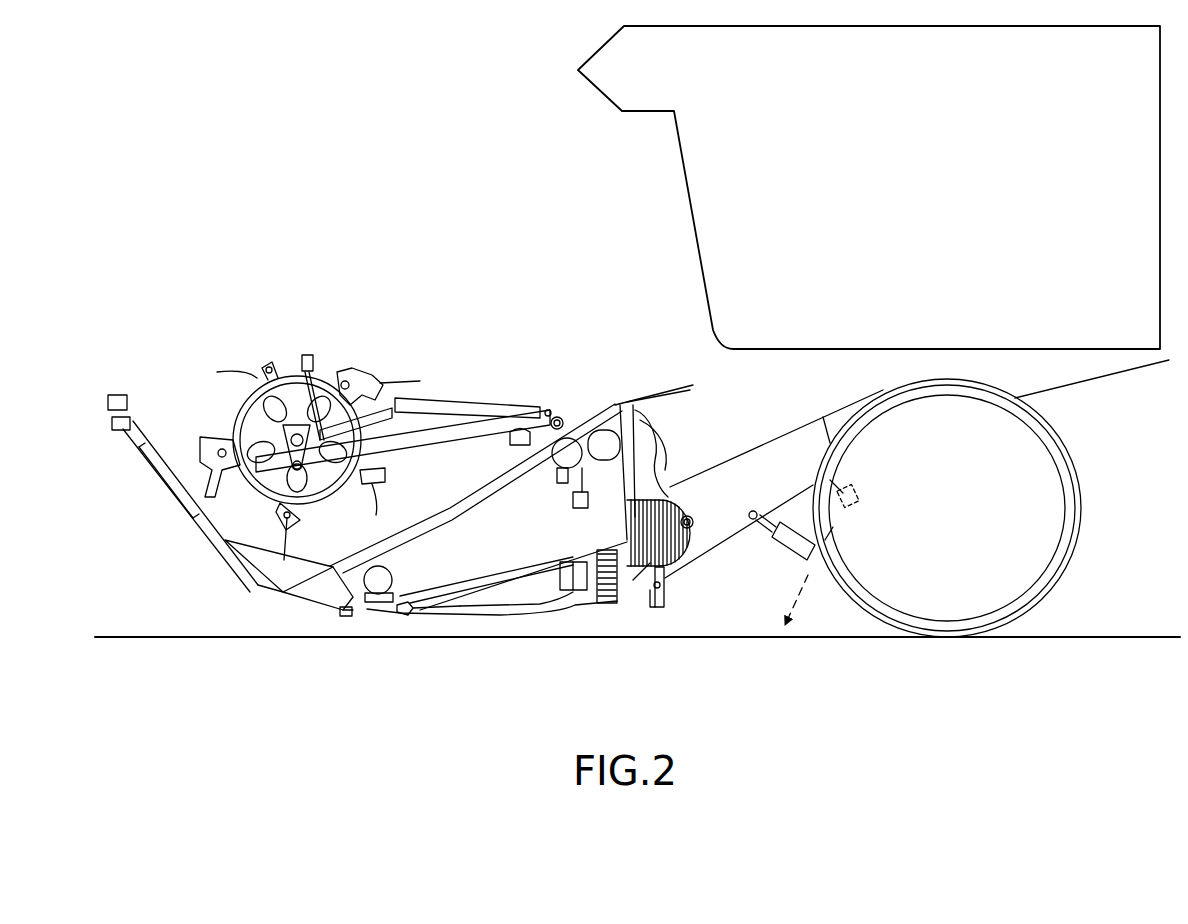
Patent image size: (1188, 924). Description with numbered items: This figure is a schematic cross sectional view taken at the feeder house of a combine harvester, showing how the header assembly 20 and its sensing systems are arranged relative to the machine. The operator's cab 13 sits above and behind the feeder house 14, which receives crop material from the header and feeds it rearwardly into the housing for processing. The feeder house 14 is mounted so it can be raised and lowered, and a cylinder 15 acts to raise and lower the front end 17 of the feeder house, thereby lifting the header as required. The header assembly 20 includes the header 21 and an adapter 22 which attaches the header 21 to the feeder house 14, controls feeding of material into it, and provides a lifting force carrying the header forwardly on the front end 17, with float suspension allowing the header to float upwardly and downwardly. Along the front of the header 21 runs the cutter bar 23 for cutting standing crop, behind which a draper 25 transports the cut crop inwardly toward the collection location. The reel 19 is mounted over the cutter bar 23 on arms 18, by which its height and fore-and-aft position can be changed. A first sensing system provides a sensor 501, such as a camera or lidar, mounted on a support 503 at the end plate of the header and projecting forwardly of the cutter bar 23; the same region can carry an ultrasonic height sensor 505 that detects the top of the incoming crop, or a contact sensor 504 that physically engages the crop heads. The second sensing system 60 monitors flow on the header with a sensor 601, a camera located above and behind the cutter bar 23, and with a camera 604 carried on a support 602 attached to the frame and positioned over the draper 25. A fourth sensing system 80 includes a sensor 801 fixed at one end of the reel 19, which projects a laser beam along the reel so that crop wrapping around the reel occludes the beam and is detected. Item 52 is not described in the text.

The cab 13 is at (710, 152).
The feeder house 14 is at (793, 431).
The cylinder 15 is at (787, 537).
The front end of the feeder house 17 is at (720, 525).
The arms 18 is at (468, 432).
The reel 19 is at (323, 362).
The header assembly 20 is at (573, 386).
The header 21 is at (541, 384).
The adapter 22 is at (634, 381).
The cutter bar 23 is at (375, 615).
The draper 25 is at (443, 590).
The exhaust pipe 52 is at (454, 616).
The second sensing system 60 is at (520, 598).
The fourth sensing system 80 is at (293, 359).
The sensor 801 is at (307, 354).
The sensor 501 is at (110, 394).
The support 503 is at (150, 443).
The contact sensor 504 is at (187, 503).
The ultrasonic height sensor 505 is at (110, 428).
The sensor 601 is at (558, 473).
The support 602 is at (597, 468).
The camera 604 is at (590, 497).